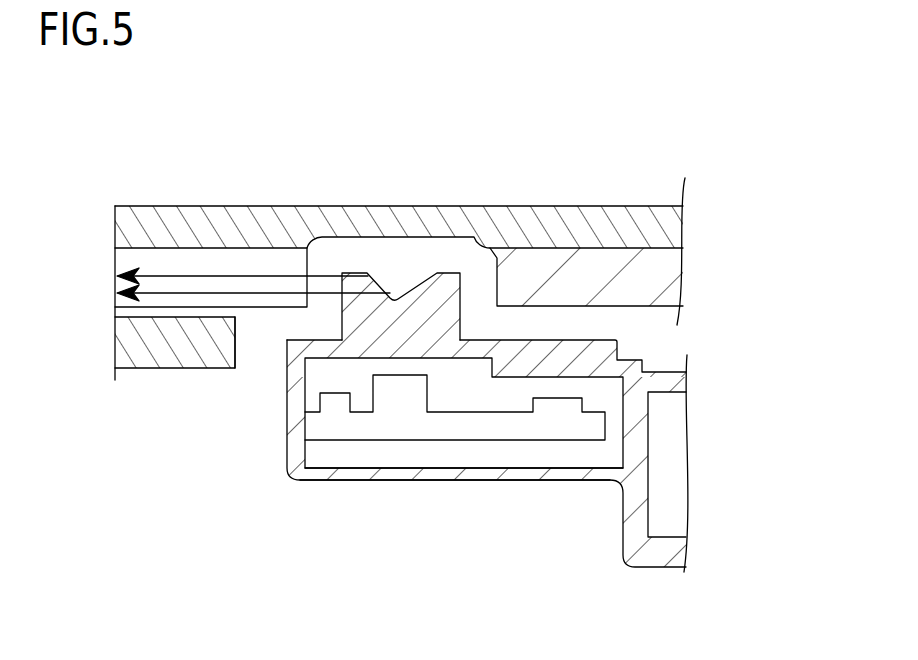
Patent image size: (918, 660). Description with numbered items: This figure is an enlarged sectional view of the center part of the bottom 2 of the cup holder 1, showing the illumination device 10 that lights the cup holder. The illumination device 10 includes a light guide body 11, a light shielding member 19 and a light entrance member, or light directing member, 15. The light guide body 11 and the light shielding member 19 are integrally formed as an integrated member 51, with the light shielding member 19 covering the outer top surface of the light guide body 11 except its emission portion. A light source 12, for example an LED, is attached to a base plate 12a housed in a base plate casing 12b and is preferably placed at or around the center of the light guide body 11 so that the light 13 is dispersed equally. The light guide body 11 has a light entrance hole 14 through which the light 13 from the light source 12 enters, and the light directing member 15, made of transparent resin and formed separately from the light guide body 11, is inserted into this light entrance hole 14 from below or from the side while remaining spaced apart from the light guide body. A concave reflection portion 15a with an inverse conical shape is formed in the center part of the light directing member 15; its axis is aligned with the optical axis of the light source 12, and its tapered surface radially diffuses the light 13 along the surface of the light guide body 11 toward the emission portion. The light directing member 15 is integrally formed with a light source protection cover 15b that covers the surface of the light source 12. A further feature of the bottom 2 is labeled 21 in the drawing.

The cup holder 1 is at (668, 147).
The bottom 2 is at (160, 368).
The illumination device 10 is at (187, 478).
The light guide body 11 is at (657, 280).
The light source 12 is at (390, 393).
The base plate 12a is at (450, 432).
The base plate casing 12b is at (507, 482).
The light 13 is at (178, 294).
The light entrance hole 14 is at (307, 268).
The light entrance member 15 is at (460, 310).
The reflection portion 15a is at (420, 273).
The light source protection cover 15b is at (475, 347).
The light shielding member 19 is at (657, 225).
The board edge 21 is at (235, 343).
The integrated member 51 is at (759, 210).